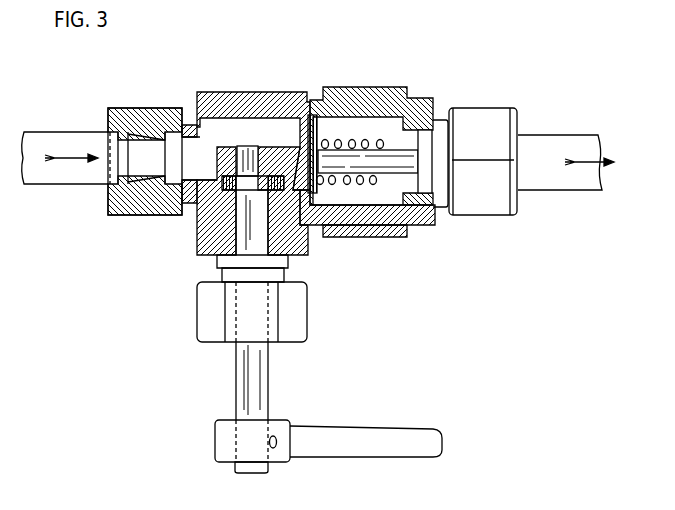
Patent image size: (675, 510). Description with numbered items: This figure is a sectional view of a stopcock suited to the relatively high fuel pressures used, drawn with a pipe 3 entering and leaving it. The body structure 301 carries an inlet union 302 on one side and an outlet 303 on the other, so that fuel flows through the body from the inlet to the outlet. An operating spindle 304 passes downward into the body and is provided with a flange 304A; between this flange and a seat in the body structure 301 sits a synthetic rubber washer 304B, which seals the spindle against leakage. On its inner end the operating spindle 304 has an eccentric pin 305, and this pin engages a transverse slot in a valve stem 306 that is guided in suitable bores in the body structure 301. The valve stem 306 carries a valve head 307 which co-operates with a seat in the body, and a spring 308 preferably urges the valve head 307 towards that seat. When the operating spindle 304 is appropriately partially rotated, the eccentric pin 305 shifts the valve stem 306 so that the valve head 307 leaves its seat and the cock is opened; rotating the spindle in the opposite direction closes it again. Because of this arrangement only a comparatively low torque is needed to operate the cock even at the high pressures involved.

The pipe 3 is at (47, 178).
The body structure 301 is at (197, 100).
The inlet union 302 is at (134, 108).
The outlet 303 is at (478, 120).
The operating spindle 304 is at (248, 257).
The flange 304A is at (170, 212).
The synthetic rubber washer 304B is at (312, 226).
The eccentric pin 305 is at (244, 146).
The valve stem 306 is at (275, 147).
The valve head 307 is at (327, 103).
The spring 308 is at (372, 143).